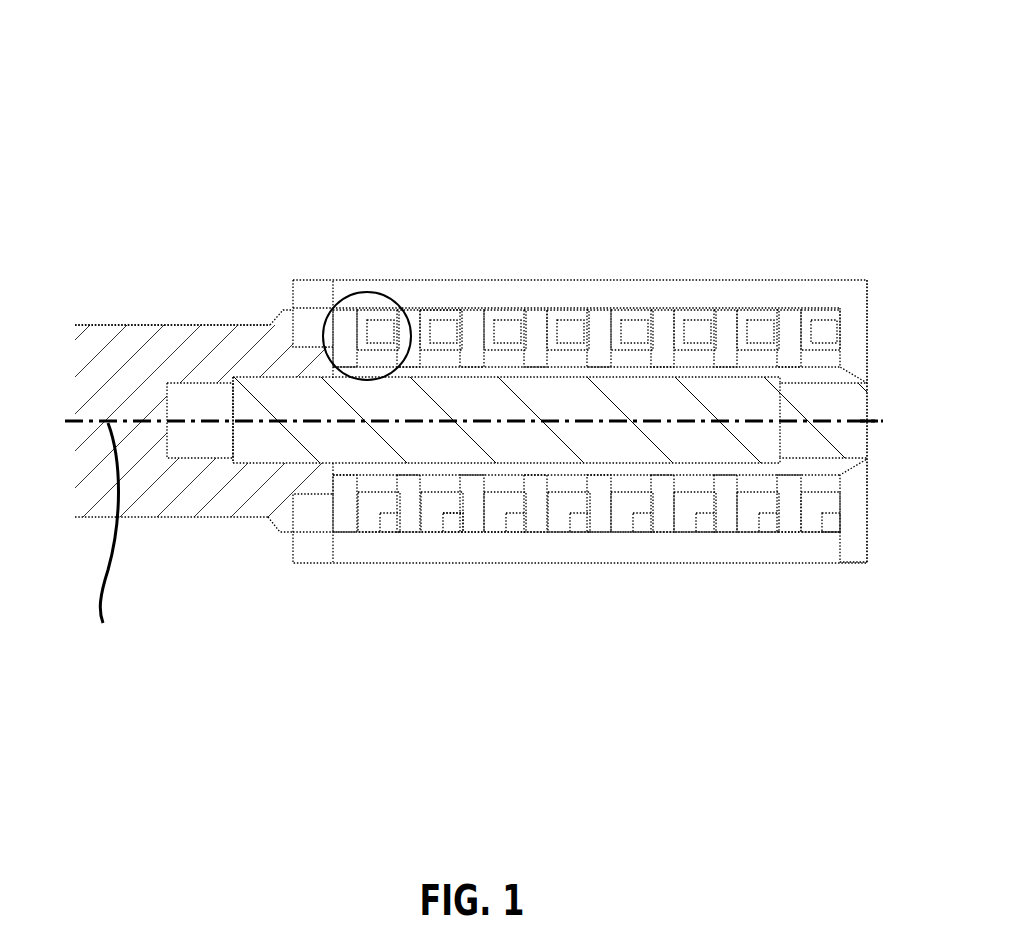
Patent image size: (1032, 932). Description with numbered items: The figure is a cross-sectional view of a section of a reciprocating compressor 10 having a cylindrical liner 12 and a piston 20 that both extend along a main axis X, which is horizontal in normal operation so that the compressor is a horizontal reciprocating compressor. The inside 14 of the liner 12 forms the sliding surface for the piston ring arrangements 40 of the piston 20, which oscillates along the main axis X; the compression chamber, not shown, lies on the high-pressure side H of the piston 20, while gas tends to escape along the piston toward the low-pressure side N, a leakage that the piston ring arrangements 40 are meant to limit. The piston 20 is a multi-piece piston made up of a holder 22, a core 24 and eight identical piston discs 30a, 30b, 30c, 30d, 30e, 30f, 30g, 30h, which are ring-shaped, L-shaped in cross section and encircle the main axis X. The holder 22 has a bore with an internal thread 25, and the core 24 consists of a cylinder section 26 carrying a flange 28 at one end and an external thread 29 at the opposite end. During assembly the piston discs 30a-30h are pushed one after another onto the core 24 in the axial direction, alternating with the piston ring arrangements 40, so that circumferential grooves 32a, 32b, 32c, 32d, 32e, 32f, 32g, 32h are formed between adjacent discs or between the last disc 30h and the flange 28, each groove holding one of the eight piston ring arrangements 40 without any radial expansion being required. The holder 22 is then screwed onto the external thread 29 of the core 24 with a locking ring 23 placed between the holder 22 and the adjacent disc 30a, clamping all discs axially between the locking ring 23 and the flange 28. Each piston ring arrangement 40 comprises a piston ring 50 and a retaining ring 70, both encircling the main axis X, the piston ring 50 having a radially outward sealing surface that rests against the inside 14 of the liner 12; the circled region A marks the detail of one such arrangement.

The reciprocating compressor 10 is at (167, 145).
The cylindrical liner 12 is at (775, 298).
The inside of the liner 14 is at (327, 312).
The piston 20 is at (187, 566).
The holder 22 is at (98, 337).
The locking ring 23 is at (302, 328).
The core 24 is at (877, 360).
The internal thread 25 is at (178, 458).
The cylinder section 26 is at (707, 448).
The flange 28 is at (858, 517).
The external thread 29 is at (262, 377).
The piston disc 30a is at (345, 323).
The piston disc 30b is at (392, 305).
The piston disc 30c is at (472, 325).
The piston disc 30d is at (540, 320).
The piston disc 30e is at (600, 323).
The piston disc 30f is at (664, 320).
The piston disc 30g is at (723, 323).
The piston disc 30h is at (788, 323).
The circumferential groove 32a is at (378, 493).
The circumferential groove 32b is at (443, 493).
The circumferential groove 32c is at (510, 493).
The circumferential groove 32d is at (572, 493).
The circumferential groove 32e is at (623, 493).
The circumferential groove 32f is at (700, 493).
The circumferential groove 32g is at (757, 493).
The circumferential groove 32h is at (823, 493).
The piston ring arrangement 40 is at (649, 299).
The piston ring 50 is at (417, 318).
The retaining ring 70 is at (448, 520).
The detail region A is at (387, 288).
The main axis X is at (114, 544).
The low-pressure side N is at (460, 408).
The high-pressure side H is at (884, 405).